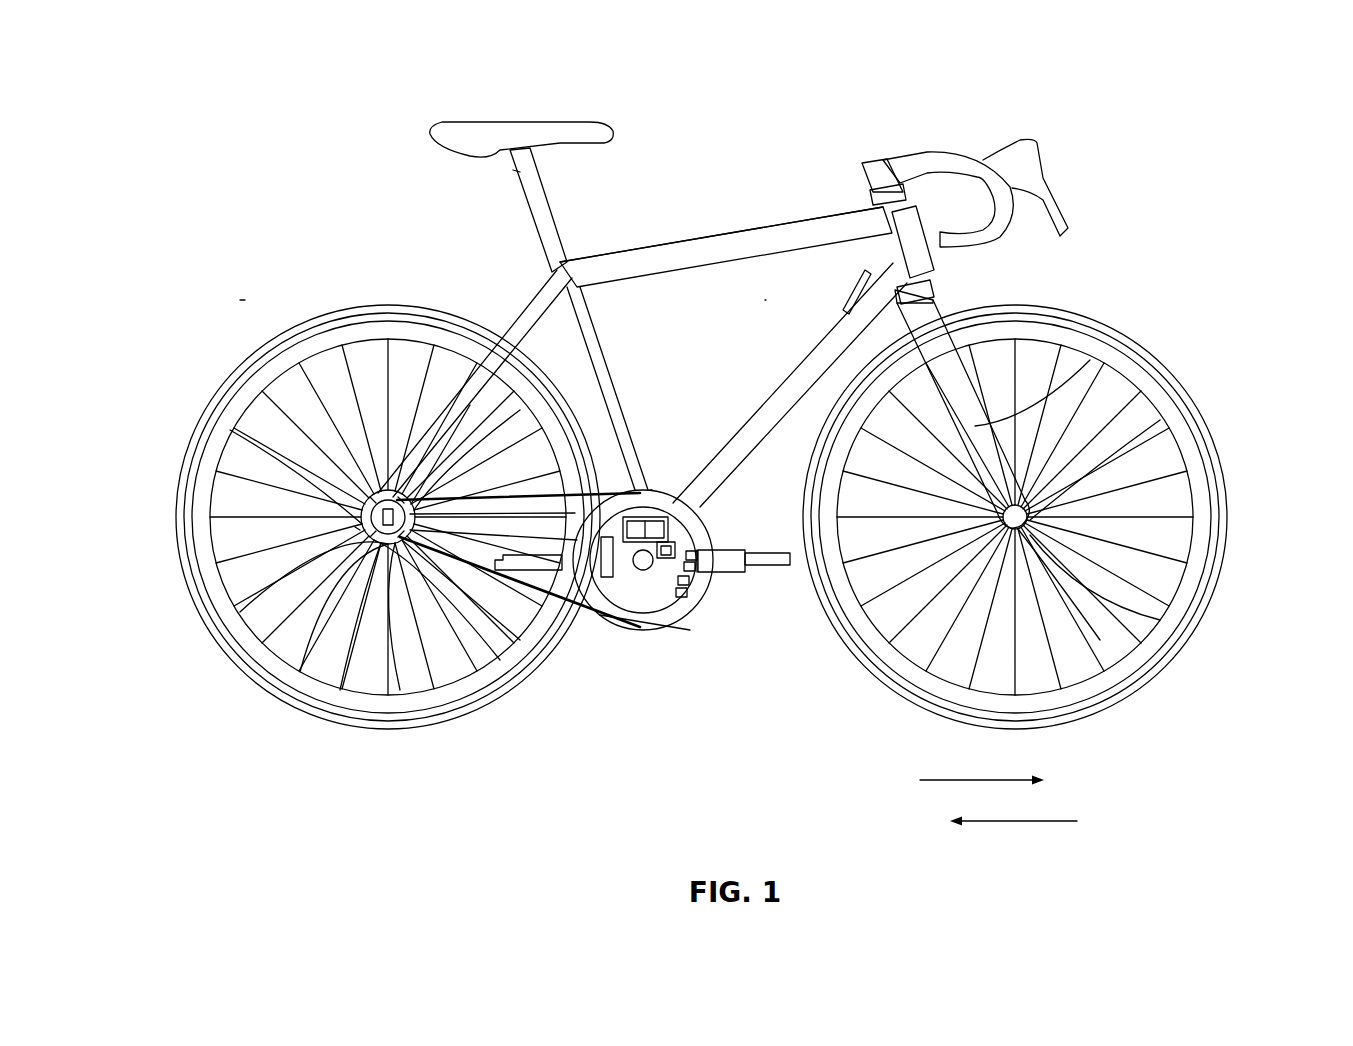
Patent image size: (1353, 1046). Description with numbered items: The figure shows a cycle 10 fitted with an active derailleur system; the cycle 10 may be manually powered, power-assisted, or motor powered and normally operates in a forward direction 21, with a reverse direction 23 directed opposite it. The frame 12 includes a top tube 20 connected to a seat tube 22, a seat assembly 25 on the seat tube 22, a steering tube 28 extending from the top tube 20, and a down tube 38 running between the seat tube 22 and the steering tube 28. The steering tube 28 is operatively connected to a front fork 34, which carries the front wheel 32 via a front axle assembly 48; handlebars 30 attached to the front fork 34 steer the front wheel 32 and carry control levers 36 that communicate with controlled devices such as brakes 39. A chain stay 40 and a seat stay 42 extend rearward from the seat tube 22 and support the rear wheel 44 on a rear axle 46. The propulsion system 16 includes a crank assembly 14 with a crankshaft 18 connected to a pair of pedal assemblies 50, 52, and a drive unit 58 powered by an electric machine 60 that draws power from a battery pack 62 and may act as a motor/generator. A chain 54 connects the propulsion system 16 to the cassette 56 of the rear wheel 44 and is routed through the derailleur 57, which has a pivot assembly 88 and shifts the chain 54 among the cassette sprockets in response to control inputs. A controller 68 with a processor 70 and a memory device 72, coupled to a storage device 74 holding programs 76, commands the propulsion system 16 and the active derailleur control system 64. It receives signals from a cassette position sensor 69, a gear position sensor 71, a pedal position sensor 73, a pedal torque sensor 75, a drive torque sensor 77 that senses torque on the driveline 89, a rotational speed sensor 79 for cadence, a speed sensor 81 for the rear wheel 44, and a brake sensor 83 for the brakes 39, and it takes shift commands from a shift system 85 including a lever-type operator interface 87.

The cycle 10 is at (284, 294).
The frame 12 is at (780, 215).
The crank assembly 14 is at (740, 573).
The propulsion system 16 is at (632, 593).
The crankshaft 18 is at (650, 590).
The top tube 20 is at (695, 240).
The forward direction 21 is at (982, 773).
The seat tube 22 is at (615, 386).
The reverse direction 23 is at (1012, 821).
The seat assembly 25 is at (522, 122).
The steering tube 28 is at (890, 244).
The handlebars 30 is at (957, 162).
The front wheel 32 is at (1232, 516).
The front fork 34 is at (1090, 362).
The control levers 36 is at (1040, 192).
The down tube 38 is at (787, 373).
The brakes 39 is at (1168, 626).
The chain stay 40 is at (490, 530).
The seat stay 42 is at (525, 305).
The rear wheel 44 is at (177, 517).
The rear axle 46 is at (257, 607).
The front axle assembly 48 is at (1192, 436).
The pedal assembly 50 is at (772, 566).
The pedal assembly 52 is at (548, 600).
The chain 54 is at (520, 640).
The cassette 56 is at (267, 633).
The derailleur 57 is at (340, 690).
The drive unit 58 is at (686, 630).
The electric machine 60 is at (640, 620).
The battery pack 62 is at (602, 598).
The active derailleur control system 64 is at (658, 488).
The controller 68 is at (712, 515).
The cassette position sensor 69 is at (367, 507).
The processor 70 is at (653, 484).
The gear position sensor 71 is at (373, 492).
The memory device 72 is at (670, 515).
The pedal position sensor 73 is at (697, 556).
The storage device 74 is at (688, 549).
The pedal torque sensor 75 is at (693, 566).
The programs 76 is at (700, 560).
The drive torque sensor 77 is at (685, 580).
The rotational speed sensor 79 is at (680, 592).
The speed sensor 81 is at (363, 517).
The brake sensor 83 is at (1100, 640).
The shift system 85 is at (771, 289).
The operator interface 87 is at (850, 290).
The pivot assembly 88 is at (400, 690).
The driveline 89 is at (324, 541).